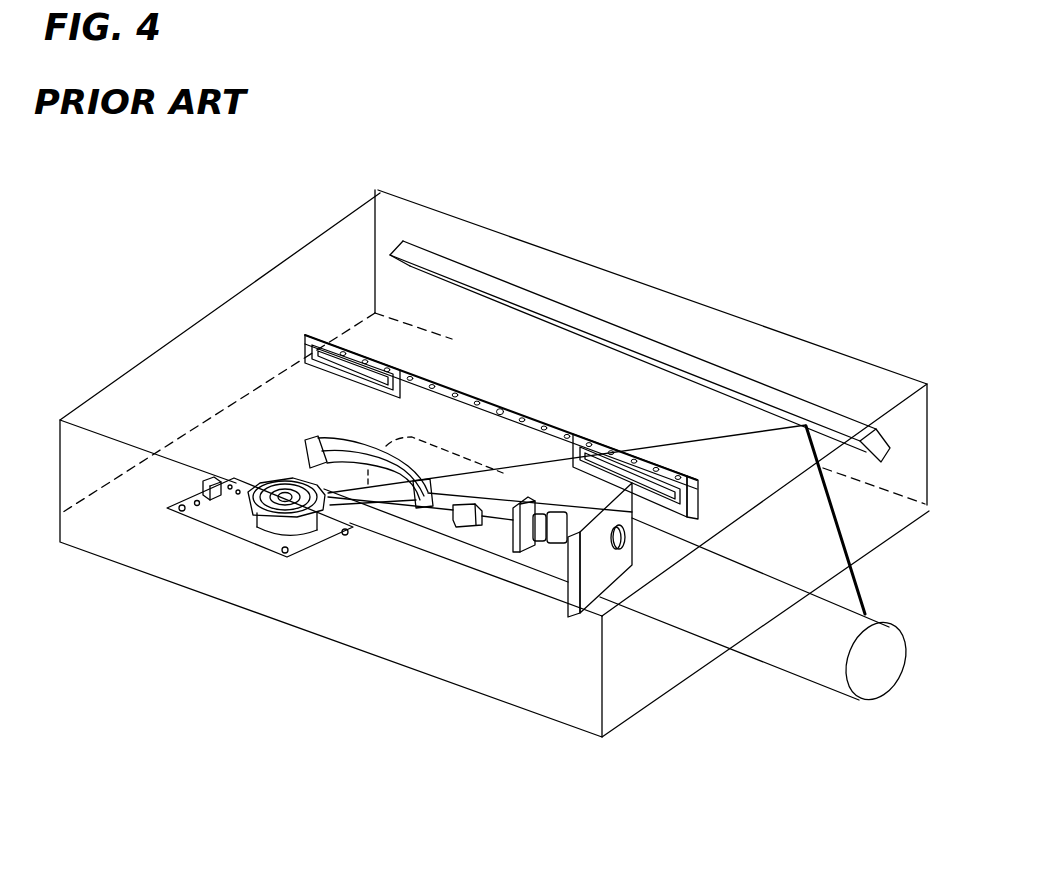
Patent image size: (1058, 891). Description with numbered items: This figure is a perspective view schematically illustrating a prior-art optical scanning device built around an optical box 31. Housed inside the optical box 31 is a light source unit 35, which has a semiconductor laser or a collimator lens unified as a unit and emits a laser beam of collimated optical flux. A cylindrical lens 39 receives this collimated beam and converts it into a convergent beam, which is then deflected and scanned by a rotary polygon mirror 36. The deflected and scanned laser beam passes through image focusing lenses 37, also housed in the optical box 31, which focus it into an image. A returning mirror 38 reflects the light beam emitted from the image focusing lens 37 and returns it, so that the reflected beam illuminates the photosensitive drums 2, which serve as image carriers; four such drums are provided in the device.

The photosensitive drum 2 is at (871, 683).
The optical box 31 is at (520, 687).
The light source unit 35 is at (603, 558).
The rotary polygon mirror 36 is at (277, 517).
The image focusing lens 37 is at (305, 445).
The returning mirror 38 is at (715, 374).
The cylindrical lens 39 is at (462, 523).